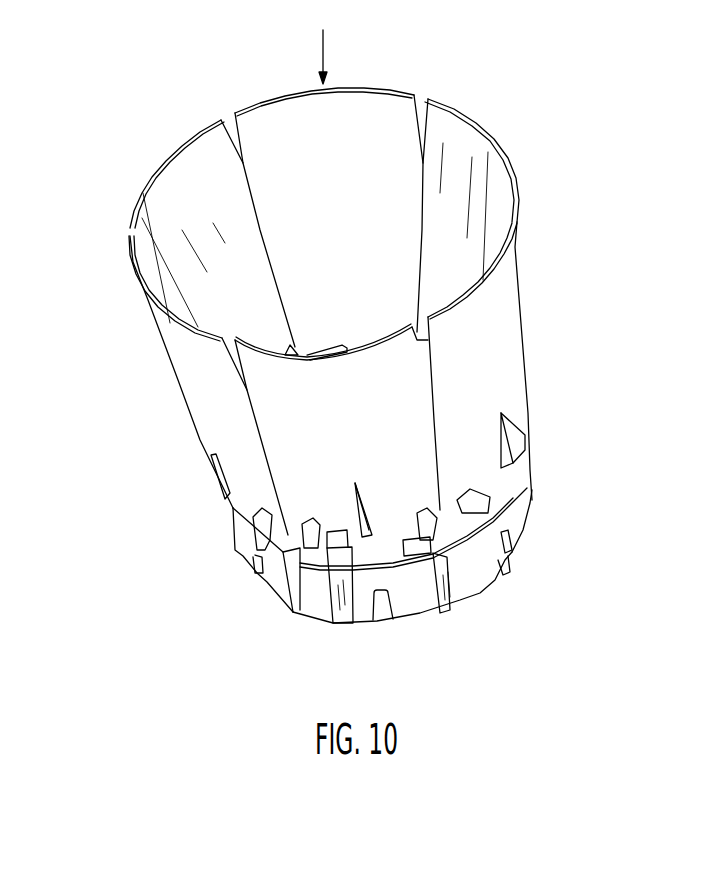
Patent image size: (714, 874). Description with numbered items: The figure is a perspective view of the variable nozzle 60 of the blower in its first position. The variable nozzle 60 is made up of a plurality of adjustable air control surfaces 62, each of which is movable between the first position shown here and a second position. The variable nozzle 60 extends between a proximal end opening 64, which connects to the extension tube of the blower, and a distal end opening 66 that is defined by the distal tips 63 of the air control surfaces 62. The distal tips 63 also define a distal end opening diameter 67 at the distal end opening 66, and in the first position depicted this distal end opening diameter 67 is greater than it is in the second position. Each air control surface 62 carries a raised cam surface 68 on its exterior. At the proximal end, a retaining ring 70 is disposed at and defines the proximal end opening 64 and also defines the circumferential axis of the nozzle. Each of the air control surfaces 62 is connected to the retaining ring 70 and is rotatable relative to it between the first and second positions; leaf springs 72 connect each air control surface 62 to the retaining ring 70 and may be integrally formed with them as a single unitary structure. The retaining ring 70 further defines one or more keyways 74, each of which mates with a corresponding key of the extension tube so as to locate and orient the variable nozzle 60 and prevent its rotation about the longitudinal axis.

The variable nozzle 60 is at (323, 364).
The adjustable air control surfaces 62 is at (373, 137).
The distal tips 63 is at (282, 93).
The proximal end opening 64 is at (297, 623).
The distal end opening 66 is at (182, 218).
The distal end opening diameter 67 is at (322, 372).
The raised cam surface 68 is at (372, 520).
The retaining ring 70 is at (529, 533).
The leaf springs 72 is at (363, 620).
The keyways 74 is at (248, 589).